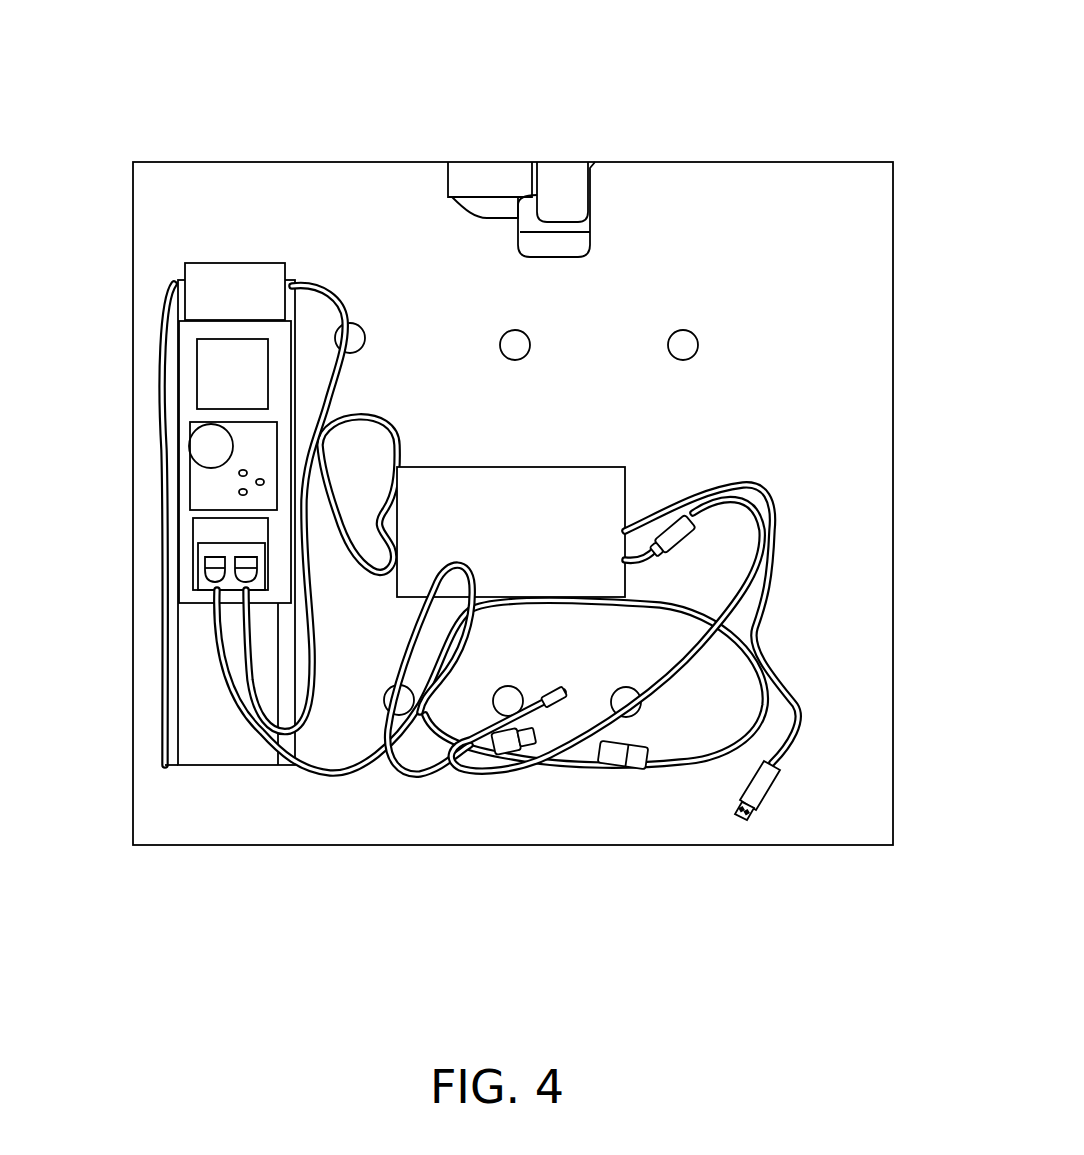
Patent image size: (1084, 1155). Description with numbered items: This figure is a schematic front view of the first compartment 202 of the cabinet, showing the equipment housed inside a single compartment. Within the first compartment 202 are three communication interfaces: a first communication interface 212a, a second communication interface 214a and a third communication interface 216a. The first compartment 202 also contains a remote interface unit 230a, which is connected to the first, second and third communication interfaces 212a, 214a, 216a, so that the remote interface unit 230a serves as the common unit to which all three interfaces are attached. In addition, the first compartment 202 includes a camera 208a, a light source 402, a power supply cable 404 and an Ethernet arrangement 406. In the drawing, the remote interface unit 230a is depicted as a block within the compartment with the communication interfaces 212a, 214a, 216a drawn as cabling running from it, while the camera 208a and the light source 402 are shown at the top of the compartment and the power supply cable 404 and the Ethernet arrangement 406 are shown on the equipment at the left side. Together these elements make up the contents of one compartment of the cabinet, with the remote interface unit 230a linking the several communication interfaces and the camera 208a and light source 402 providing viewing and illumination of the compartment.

The first compartment 202 is at (788, 76).
The light source 402 is at (478, 182).
The camera 208a is at (555, 188).
The power supply cable 404 is at (222, 447).
The Ethernet arrangement 406 is at (220, 542).
The remote interface unit 230a is at (511, 532).
The first communication interface 212a is at (763, 780).
The third communication interface 216a is at (290, 767).
The second communication interface 214a is at (490, 762).